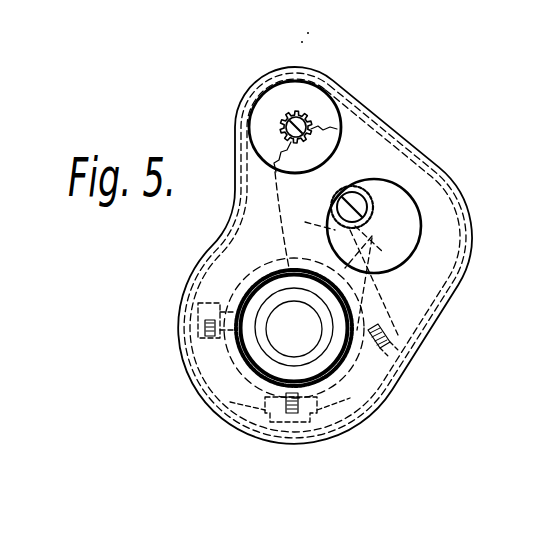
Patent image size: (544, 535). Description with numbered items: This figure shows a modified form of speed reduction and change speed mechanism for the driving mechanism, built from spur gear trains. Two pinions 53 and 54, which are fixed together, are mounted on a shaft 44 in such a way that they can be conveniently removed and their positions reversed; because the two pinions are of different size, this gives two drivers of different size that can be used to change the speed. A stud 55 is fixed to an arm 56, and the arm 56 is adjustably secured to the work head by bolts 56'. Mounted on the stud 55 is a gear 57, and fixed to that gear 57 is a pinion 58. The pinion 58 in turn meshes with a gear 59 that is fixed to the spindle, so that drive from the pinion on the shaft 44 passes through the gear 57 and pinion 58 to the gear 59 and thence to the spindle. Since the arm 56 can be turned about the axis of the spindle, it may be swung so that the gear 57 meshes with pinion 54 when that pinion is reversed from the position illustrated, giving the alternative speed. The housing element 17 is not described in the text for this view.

The hub / worm wheel assembly 17 is at (368, 398).
The shaft 44 is at (288, 121).
The pinion 53 is at (306, 116).
The pinion 54 is at (347, 111).
The stud 55 is at (370, 218).
The arm 56 is at (433, 231).
The bolts 56' is at (175, 315).
The gear 57 is at (427, 158).
The pinion 58 is at (345, 265).
The gear 59 is at (398, 304).